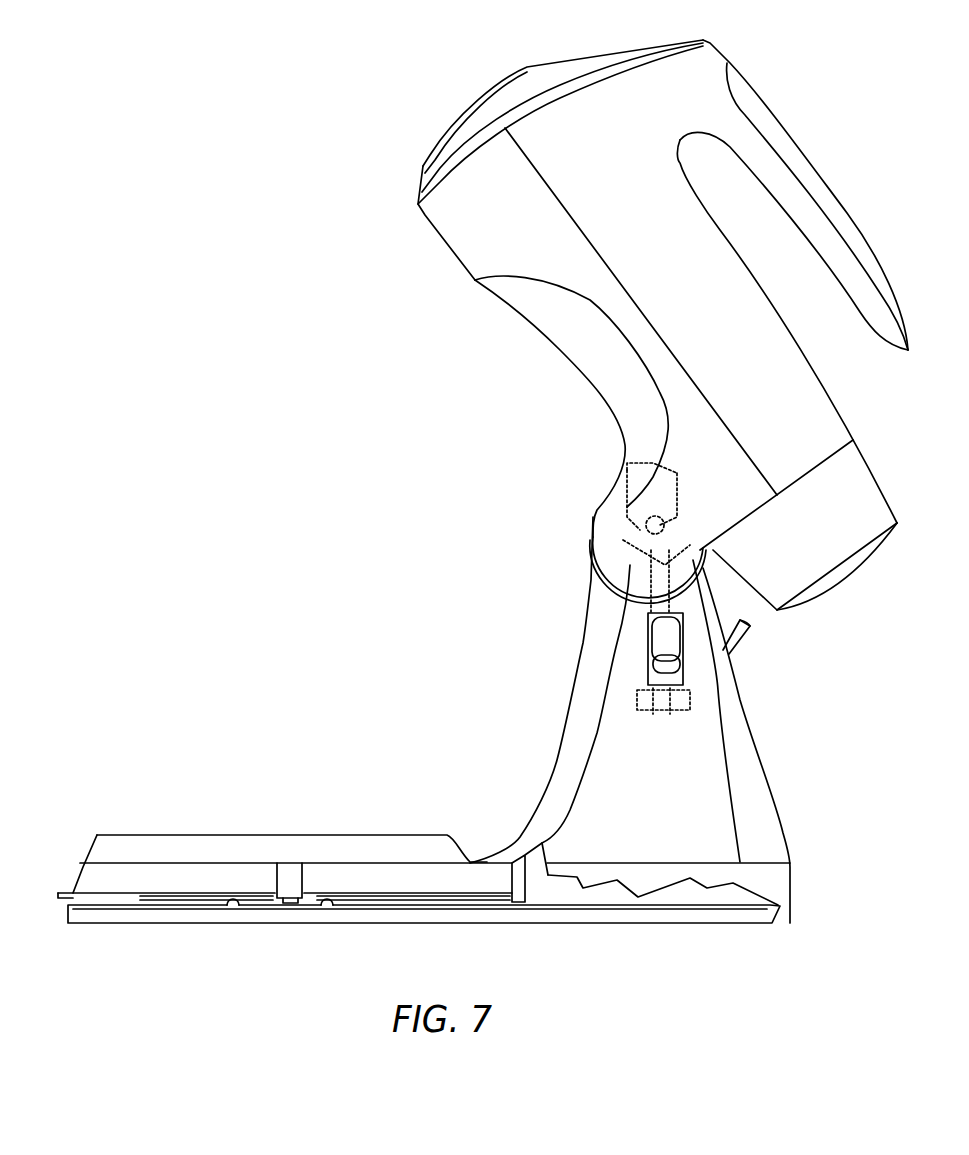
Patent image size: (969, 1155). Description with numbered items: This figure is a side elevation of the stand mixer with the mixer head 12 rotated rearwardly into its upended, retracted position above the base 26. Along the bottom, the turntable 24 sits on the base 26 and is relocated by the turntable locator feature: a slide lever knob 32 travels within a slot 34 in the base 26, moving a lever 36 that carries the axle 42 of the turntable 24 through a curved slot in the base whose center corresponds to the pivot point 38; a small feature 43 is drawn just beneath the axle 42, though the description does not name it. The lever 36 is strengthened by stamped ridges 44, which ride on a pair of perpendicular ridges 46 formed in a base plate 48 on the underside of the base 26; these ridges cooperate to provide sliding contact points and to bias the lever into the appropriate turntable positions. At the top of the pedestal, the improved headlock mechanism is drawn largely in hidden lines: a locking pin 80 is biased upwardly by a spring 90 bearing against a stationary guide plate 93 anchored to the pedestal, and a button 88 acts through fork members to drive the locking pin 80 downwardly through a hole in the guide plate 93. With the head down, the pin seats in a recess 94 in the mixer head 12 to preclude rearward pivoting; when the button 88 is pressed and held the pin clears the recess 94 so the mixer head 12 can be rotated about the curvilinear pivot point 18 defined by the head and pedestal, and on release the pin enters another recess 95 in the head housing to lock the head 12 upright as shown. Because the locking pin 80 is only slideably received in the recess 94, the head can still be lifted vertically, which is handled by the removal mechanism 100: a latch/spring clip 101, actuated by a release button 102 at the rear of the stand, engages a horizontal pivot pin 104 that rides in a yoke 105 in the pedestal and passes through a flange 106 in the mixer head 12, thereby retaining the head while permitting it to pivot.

The mixer head 12 is at (758, 293).
The pivot point 18 is at (593, 557).
The turntable 24 is at (347, 835).
The base 26 is at (117, 918).
The slide lever knob 32 is at (63, 893).
The slot 34 is at (62, 900).
The lever 36 is at (118, 896).
The pivot point 38 is at (518, 883).
The axle 42 is at (300, 880).
The notch 43 is at (277, 893).
The ridges 44 is at (212, 905).
The perpendicular ridges 46 is at (232, 908).
The base plate 48 is at (357, 907).
The locking pin 80 is at (680, 697).
The button 88 is at (662, 632).
The spring 90 is at (660, 677).
The guide plate 93 is at (690, 693).
The recess 94 is at (597, 570).
The recess 95 is at (597, 530).
The mechanism for removing the head 100 is at (740, 648).
The latch/spring clip 101 is at (623, 463).
The release button 102 is at (743, 623).
The pivot pin 104 is at (637, 517).
The yoke 105 is at (593, 543).
The flange 106 is at (633, 527).